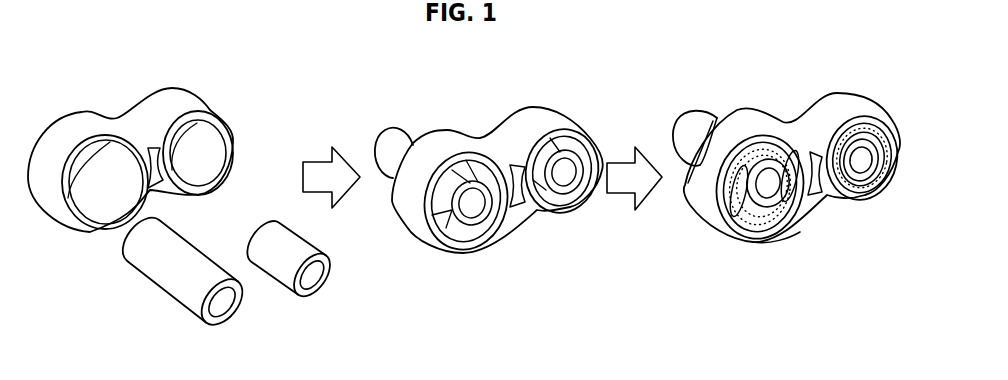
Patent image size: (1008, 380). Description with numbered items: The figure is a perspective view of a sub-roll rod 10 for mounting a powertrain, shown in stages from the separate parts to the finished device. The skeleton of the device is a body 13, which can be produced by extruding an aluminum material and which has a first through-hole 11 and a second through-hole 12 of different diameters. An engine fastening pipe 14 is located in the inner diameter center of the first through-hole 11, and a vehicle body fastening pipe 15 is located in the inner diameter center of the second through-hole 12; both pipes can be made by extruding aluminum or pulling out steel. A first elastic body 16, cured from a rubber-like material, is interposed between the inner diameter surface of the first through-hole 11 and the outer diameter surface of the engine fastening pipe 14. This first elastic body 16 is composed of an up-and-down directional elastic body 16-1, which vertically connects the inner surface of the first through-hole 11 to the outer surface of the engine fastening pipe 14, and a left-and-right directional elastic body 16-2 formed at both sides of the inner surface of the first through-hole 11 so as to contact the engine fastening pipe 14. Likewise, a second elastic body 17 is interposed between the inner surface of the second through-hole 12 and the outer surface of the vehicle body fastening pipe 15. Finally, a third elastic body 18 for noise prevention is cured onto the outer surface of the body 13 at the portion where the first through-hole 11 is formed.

The sub-roll rod 10 is at (796, 253).
The first through-hole 11 is at (97, 215).
The second through-hole 12 is at (213, 137).
The body 13 is at (127, 103).
The engine fastening pipe 14 is at (175, 283).
The vehicle body fastening pipe 15 is at (278, 268).
The first elastic body 16 is at (660, 184).
The up-and-down directional elastic body 16-1 is at (757, 223).
The left-and-right directional elastic body 16-2 is at (728, 202).
The second elastic body 17 is at (848, 182).
The third elastic body 18 is at (708, 150).